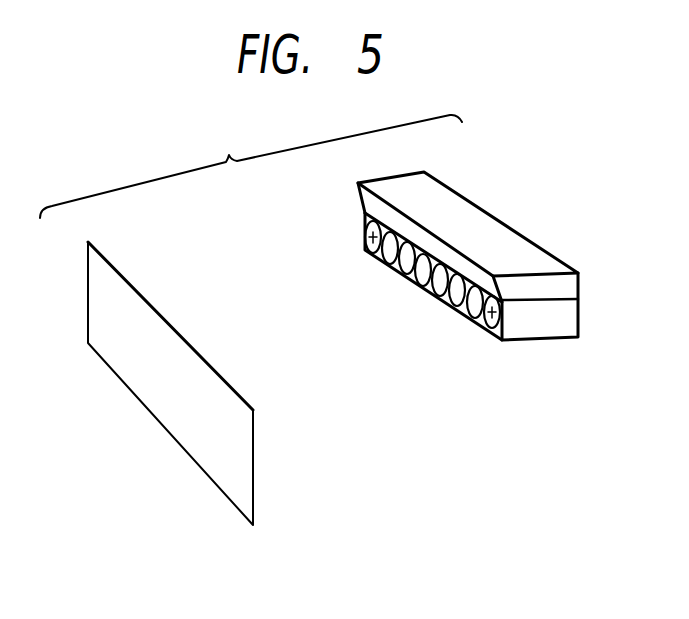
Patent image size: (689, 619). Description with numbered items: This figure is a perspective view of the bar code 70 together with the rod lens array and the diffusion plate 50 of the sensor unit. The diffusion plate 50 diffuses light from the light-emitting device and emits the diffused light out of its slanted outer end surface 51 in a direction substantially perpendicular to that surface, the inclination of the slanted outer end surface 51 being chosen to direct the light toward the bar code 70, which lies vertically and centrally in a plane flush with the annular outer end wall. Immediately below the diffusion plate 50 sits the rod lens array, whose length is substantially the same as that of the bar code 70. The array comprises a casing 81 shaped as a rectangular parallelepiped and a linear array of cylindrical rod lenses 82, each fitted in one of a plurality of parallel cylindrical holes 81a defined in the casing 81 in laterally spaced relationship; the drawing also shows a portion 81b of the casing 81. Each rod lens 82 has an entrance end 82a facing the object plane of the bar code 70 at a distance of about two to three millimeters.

The diffusion plate 50 is at (443, 197).
The slanted outer end surface 51 is at (358, 192).
The bar code 70 is at (255, 472).
The casing 81 is at (547, 328).
The cylindrical holes 81a is at (470, 316).
The upper strip of lens holder 81b is at (365, 218).
The cylindrical rod lenses 82 is at (372, 257).
The entrance end 82a is at (365, 238).